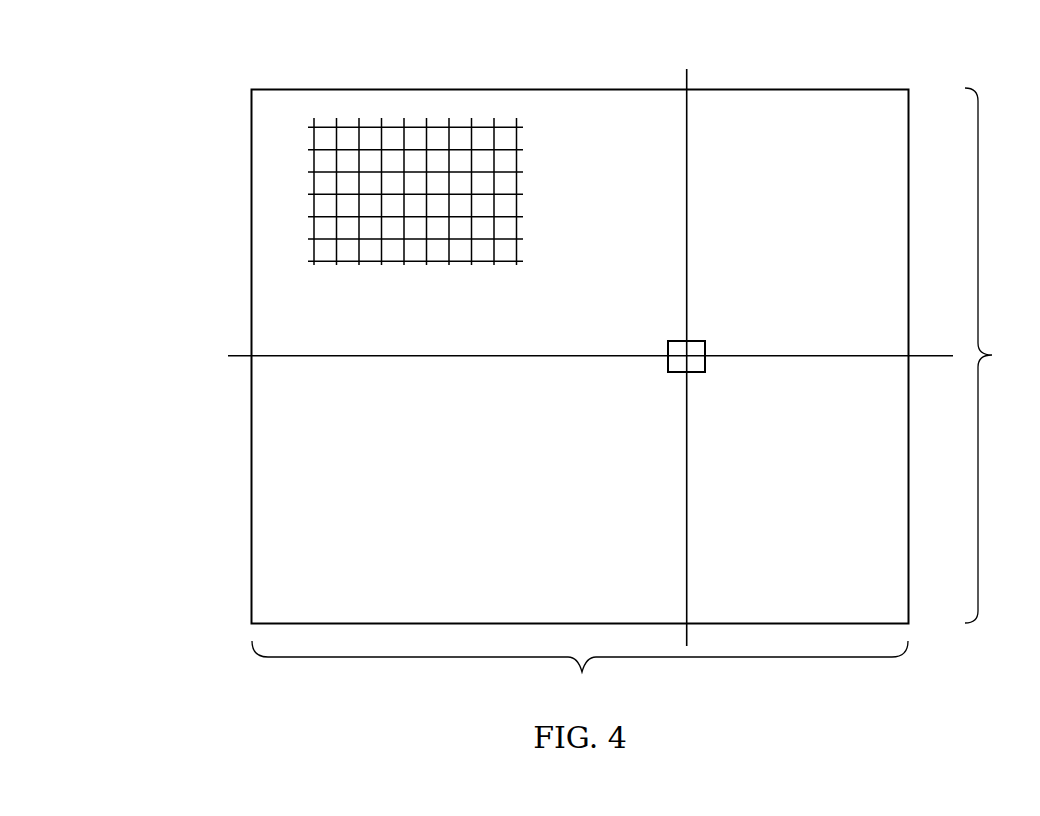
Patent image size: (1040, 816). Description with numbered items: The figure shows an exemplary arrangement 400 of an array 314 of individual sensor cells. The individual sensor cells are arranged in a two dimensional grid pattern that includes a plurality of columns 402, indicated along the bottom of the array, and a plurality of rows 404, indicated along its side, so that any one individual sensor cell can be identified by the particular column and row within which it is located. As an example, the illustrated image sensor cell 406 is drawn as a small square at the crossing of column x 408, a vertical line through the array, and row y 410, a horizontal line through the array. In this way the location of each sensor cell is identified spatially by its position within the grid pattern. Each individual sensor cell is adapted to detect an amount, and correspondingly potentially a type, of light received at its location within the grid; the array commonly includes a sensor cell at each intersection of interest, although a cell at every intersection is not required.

The arrangement 400 is at (960, 48).
The array 314 is at (888, 225).
The plurality of columns 402 is at (580, 669).
The plurality of rows 404 is at (995, 355).
The image sensor cell 406 is at (705, 363).
The column x 408 is at (688, 485).
The row y 410 is at (465, 358).